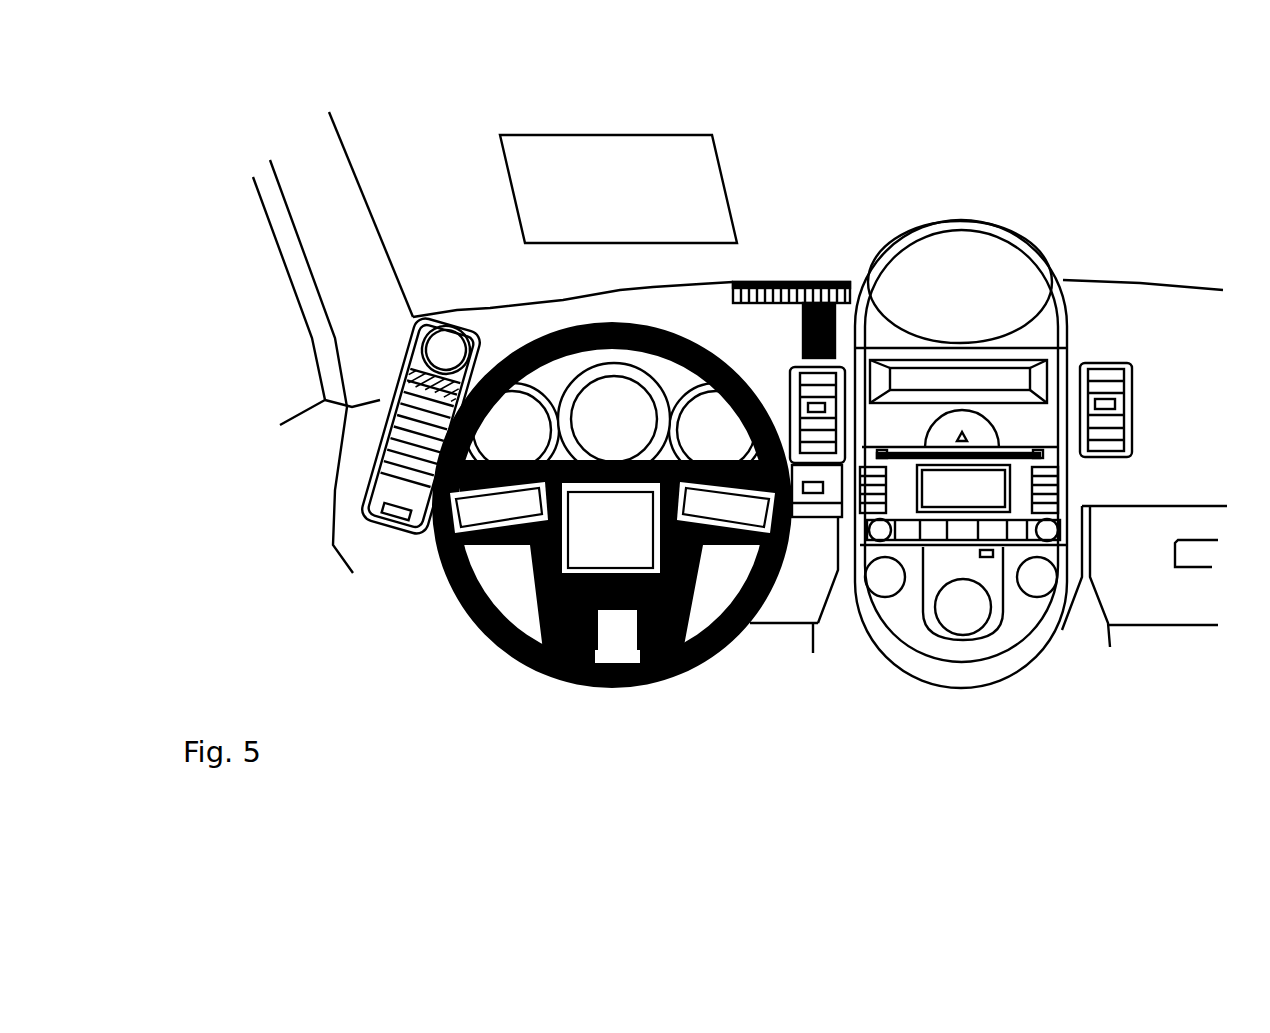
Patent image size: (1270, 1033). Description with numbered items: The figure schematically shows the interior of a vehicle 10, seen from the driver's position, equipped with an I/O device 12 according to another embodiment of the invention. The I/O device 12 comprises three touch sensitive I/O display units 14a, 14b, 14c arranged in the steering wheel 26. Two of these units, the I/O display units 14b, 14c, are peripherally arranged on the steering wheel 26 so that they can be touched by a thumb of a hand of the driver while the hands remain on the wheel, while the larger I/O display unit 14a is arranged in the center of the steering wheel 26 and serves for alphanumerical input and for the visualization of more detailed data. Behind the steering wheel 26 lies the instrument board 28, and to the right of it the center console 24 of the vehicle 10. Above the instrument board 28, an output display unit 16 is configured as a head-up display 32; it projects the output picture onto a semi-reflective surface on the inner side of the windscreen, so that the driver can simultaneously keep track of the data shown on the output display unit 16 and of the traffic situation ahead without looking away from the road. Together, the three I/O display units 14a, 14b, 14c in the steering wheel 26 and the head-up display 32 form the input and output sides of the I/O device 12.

The vehicle 10 is at (740, 354).
The I/O device 12 is at (950, 158).
The touch sensitive I/O display unit DT 14a is at (607, 543).
The touch sensitive I/O display unit DT 14b is at (473, 510).
The touch sensitive I/O display unit DT 14c is at (745, 515).
The output display unit DI 16 is at (554, 177).
The center console 24 is at (1013, 670).
The steering wheel 26 is at (480, 628).
The instrument board 28 is at (627, 382).
The head-up display 32 is at (540, 182).